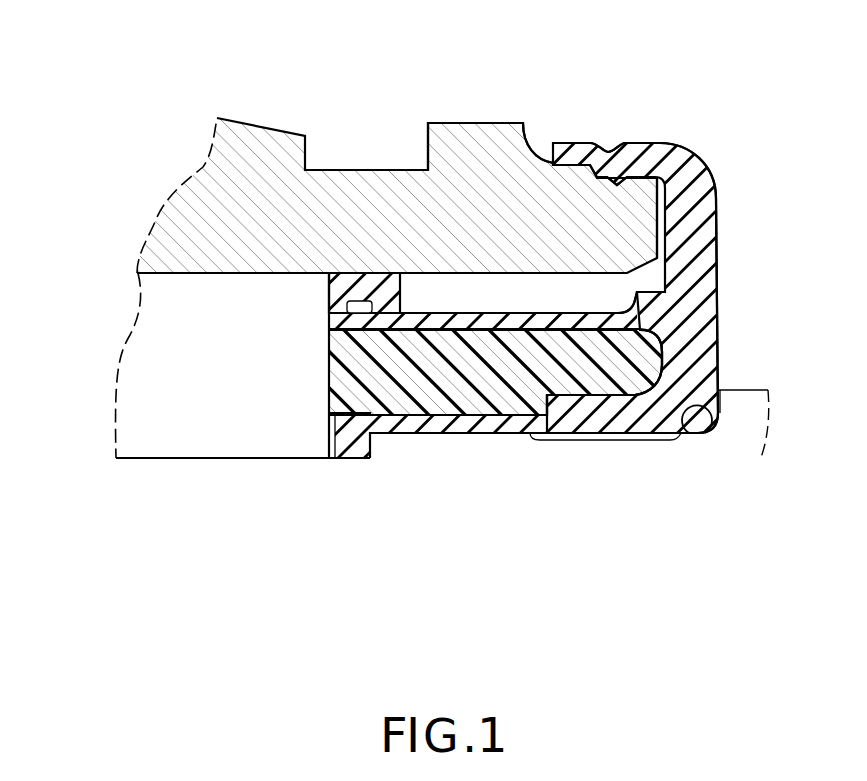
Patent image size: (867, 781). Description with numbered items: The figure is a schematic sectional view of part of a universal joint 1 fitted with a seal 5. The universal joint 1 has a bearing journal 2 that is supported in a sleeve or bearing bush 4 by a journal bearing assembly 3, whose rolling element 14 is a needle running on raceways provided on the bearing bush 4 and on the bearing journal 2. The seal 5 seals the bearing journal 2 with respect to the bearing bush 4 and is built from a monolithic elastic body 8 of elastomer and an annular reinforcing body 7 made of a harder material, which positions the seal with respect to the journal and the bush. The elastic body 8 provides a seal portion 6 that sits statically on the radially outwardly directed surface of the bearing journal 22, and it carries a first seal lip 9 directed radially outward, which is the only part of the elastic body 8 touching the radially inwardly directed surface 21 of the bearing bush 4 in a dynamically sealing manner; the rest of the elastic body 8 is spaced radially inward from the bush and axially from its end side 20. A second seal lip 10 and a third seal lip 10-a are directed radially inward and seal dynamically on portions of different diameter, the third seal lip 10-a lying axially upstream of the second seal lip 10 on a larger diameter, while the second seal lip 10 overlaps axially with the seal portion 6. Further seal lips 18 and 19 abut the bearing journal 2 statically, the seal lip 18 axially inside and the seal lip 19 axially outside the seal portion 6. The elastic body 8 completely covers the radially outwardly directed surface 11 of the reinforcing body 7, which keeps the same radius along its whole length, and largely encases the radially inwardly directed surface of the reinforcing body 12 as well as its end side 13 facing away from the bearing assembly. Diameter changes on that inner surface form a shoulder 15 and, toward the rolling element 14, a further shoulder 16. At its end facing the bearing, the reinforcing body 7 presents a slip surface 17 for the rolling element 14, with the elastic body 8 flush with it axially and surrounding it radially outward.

The universal joint 1 is at (694, 96).
The bearing journal 2 is at (495, 517).
The journal bearing assembly 3 is at (80, 236).
The bearing bush 4 is at (443, 158).
The seal 5 is at (735, 180).
The seal portion 6 is at (663, 412).
The reinforcing body 7 is at (396, 385).
The elastic body 8 is at (712, 266).
The first seal lip 9 is at (362, 282).
The second seal lip 10 is at (617, 185).
The third seal lip 10-a is at (558, 167).
The radially outwardly directed surface 11 is at (560, 331).
The radially inwardly directed surface of the reinforcing body 12 is at (456, 440).
The end side 13 is at (665, 353).
The rolling element 14 is at (146, 370).
The shoulder 15 is at (545, 402).
The shoulder 16 is at (372, 416).
The slip surface 17 is at (337, 352).
The seal lip 18 is at (357, 448).
The seal lip 19 is at (723, 408).
The end side 20 is at (654, 217).
The radially inwardly directed surface 21 is at (598, 393).
The radially outwardly directed surface of the bearing journal 22 is at (637, 415).